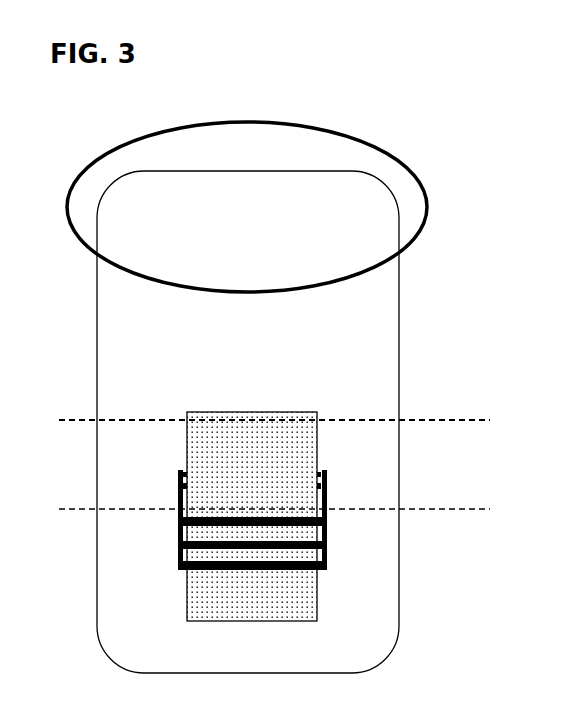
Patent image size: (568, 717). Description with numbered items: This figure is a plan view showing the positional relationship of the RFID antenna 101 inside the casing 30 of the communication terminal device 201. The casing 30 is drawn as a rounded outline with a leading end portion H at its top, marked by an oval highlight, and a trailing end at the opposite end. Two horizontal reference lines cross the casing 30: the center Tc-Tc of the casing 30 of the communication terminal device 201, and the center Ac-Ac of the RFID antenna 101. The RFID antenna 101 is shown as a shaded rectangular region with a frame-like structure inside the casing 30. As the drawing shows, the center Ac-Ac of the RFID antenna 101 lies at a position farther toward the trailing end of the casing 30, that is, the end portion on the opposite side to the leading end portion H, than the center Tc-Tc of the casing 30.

The communication terminal device 201 is at (503, 136).
The casing 30 is at (400, 335).
The leading end portion H is at (316, 142).
The center of the casing Tc is at (273, 421).
The center of the RFID antenna Ac is at (275, 511).
The RFID antenna 101 is at (352, 602).